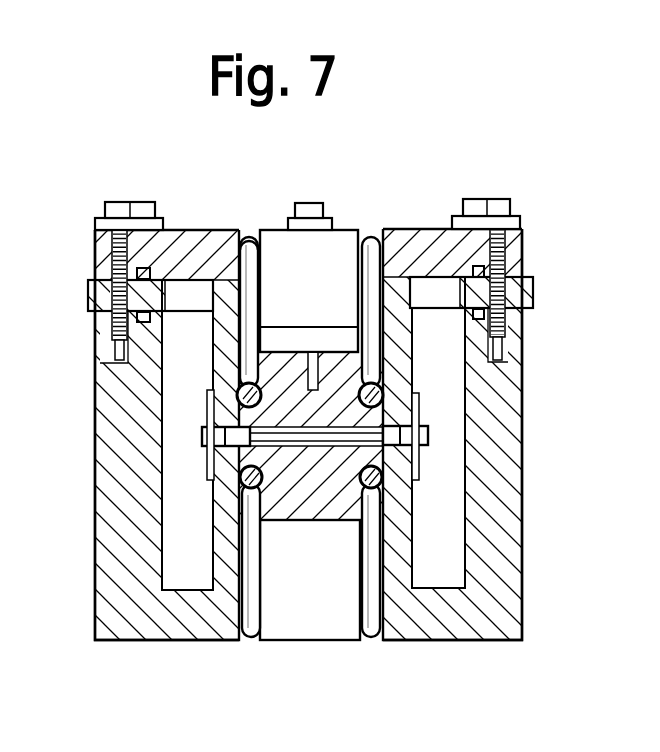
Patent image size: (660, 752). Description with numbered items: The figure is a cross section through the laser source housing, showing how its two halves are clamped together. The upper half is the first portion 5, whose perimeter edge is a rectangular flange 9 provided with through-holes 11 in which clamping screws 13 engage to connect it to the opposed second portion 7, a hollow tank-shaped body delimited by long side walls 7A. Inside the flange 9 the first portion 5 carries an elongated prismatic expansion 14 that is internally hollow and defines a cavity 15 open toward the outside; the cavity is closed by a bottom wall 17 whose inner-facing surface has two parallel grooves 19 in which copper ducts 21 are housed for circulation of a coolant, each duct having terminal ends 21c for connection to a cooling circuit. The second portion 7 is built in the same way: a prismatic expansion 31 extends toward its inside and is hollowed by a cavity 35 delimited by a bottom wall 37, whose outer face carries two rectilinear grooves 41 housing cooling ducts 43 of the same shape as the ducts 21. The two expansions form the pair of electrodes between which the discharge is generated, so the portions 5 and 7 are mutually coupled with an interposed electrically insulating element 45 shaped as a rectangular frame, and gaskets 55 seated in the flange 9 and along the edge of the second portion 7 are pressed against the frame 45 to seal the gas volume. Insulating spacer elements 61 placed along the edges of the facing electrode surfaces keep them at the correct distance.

The first portion 5 is at (428, 226).
The second portion 7 is at (528, 451).
The long side walls 7A is at (110, 533).
The flange 9 is at (188, 245).
The through-holes 11 is at (97, 248).
The clamping screws 13 is at (503, 207).
The expansion 14 is at (217, 372).
The cavity 15 is at (340, 258).
The bottom wall 17 is at (294, 350).
The grooves 19 is at (402, 425).
The ducts 21 is at (268, 222).
The terminal ends 21c is at (248, 240).
The expansion 31 is at (205, 548).
The cavity 35 is at (307, 615).
The bottom wall 37 is at (314, 505).
The grooves 41 is at (240, 479).
The cooling ducts 43 is at (252, 633).
The insulating element 45 is at (90, 292).
The gaskets 55 is at (519, 264).
The spacer elements 61 is at (202, 437).